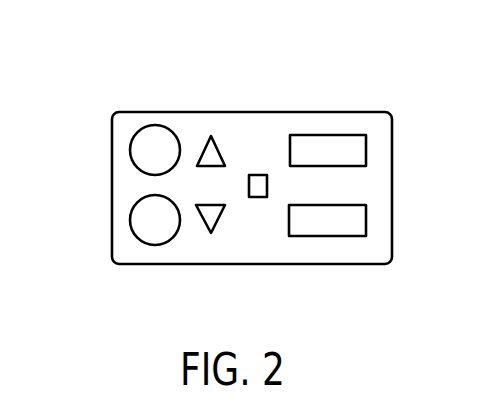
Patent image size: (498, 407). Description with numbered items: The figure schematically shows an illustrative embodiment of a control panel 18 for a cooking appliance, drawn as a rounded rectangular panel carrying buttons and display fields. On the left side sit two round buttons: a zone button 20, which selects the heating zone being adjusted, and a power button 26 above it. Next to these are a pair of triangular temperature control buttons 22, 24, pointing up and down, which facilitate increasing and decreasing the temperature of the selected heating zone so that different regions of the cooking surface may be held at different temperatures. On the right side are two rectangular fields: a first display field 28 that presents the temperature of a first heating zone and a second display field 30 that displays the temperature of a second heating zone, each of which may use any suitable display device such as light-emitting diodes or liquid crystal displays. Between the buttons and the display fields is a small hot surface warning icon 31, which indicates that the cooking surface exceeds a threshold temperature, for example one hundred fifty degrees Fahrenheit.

The control panel 18 is at (181, 38).
The zone button 20 is at (130, 220).
The temperature control button 22 is at (211, 136).
The temperature control button 24 is at (211, 233).
The power button 26 is at (130, 150).
The first display field 28 is at (323, 135).
The second display field 30 is at (308, 236).
The hot surface warning icon 31 is at (250, 175).